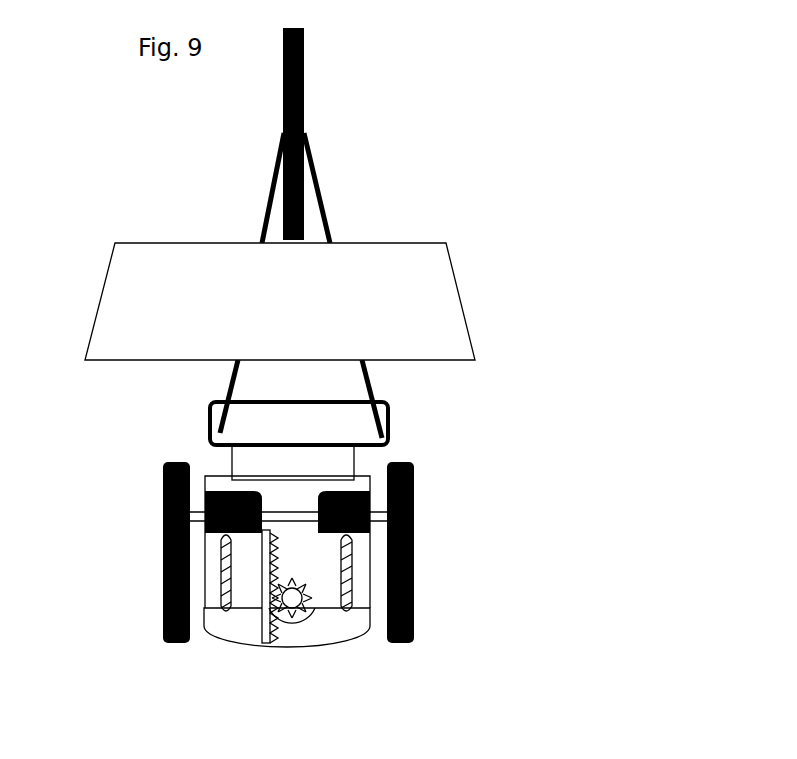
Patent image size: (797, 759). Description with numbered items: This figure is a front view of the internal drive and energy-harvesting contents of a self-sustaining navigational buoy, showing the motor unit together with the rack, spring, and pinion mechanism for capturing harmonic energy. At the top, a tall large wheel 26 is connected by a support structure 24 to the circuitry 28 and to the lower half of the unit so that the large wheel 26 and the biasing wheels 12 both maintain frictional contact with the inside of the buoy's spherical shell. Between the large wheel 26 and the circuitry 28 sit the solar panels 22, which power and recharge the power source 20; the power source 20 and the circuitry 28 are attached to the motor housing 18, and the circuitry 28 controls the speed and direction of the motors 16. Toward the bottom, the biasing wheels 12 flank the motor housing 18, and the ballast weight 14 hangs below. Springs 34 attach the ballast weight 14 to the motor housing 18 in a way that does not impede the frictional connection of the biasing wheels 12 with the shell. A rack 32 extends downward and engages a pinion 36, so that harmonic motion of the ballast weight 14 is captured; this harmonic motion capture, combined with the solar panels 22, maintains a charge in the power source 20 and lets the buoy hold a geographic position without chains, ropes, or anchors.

The biasing wheels 12 is at (413, 493).
The ballast weight 14 is at (228, 640).
The motors 16 is at (370, 476).
The motor housing 18 is at (352, 535).
The power source 20 is at (232, 464).
The solar panels 22 is at (470, 337).
The support structure 24 is at (262, 222).
The large wheel 26 is at (303, 103).
The circuitry 28 is at (260, 427).
The rack 32 is at (270, 592).
The springs 34 is at (222, 573).
The pinion 36 is at (302, 593).